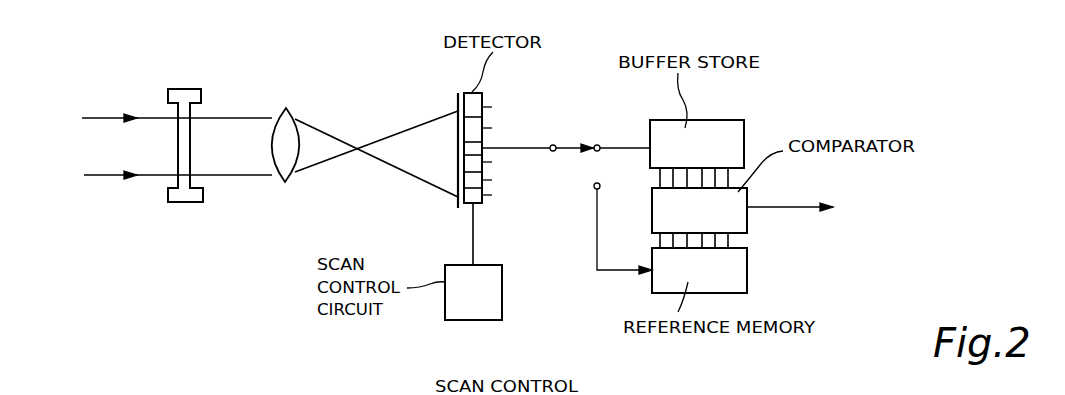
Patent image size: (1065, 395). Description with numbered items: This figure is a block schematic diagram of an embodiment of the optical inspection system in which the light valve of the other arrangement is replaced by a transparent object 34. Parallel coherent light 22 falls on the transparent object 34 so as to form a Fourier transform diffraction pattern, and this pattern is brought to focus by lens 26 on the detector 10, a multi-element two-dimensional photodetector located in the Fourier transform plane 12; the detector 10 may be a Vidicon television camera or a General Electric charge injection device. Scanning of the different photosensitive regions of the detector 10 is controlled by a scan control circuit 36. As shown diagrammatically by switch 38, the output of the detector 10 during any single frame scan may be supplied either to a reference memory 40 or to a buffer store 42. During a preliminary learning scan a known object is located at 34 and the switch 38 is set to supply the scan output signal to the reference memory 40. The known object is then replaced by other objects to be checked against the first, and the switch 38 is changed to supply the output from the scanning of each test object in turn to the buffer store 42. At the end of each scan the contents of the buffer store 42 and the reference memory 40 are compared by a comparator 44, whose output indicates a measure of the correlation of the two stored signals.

The photodetector 10 is at (484, 97).
The Fourier transform plane 12 is at (457, 104).
The parallel coherent light 22 is at (99, 117).
The lens 26 is at (288, 110).
The transparent object 34 is at (200, 96).
The scan control circuit 36 is at (492, 303).
The switch 38 is at (562, 148).
The reference memory 40 is at (730, 275).
The buffer store 42 is at (717, 143).
The comparator 44 is at (712, 210).